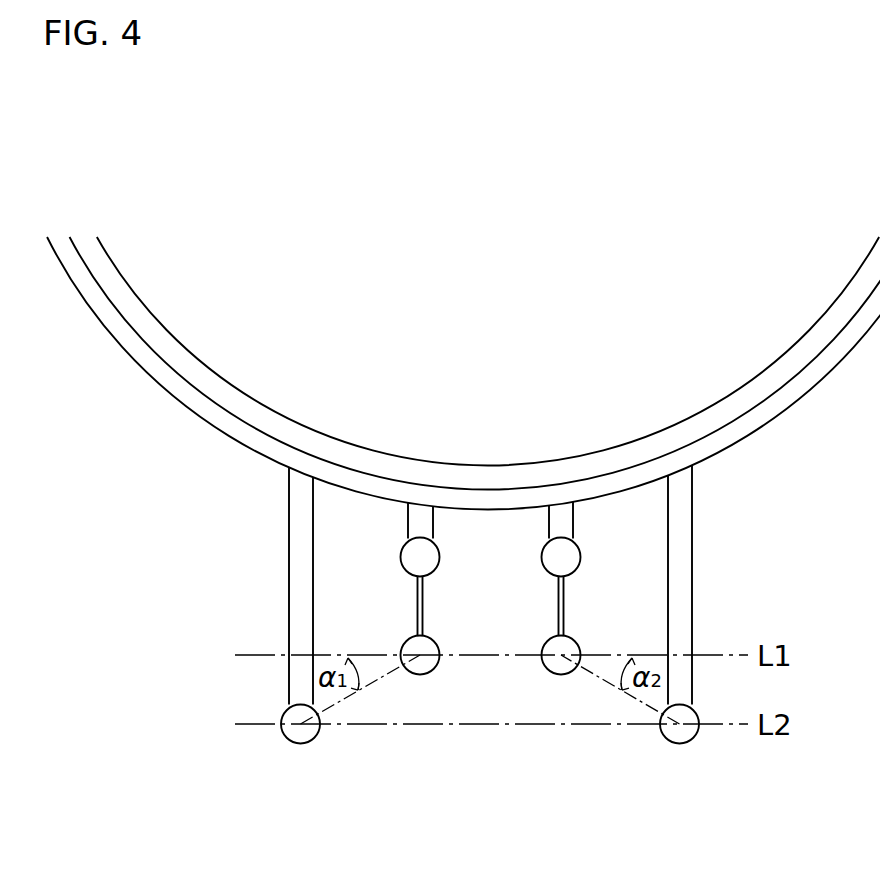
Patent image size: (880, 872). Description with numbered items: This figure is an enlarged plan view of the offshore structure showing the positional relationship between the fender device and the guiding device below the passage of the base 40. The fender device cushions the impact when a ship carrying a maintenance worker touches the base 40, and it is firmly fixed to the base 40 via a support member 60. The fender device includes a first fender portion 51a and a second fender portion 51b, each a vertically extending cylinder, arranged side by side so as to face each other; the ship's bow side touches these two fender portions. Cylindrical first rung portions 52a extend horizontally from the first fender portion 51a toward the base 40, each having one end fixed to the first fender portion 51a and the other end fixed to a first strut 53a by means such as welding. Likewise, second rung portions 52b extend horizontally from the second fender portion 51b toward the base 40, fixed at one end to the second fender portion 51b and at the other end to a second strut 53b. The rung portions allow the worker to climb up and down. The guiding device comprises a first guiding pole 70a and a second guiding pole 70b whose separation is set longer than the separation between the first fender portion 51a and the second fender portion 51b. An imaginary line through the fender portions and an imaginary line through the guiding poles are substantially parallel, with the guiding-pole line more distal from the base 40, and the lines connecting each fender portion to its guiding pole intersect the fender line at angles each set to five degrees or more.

The base 40 is at (140, 366).
The support member 60 is at (407, 523).
The first strut 53a is at (410, 555).
The first rung portions 52a is at (420, 600).
The first fender portion 51a is at (410, 648).
The second strut 53b is at (571, 555).
The second rung portions 52b is at (561, 600).
The second fender portion 51b is at (571, 648).
The first guiding pole 70a is at (302, 736).
The second guiding pole 70b is at (682, 736).